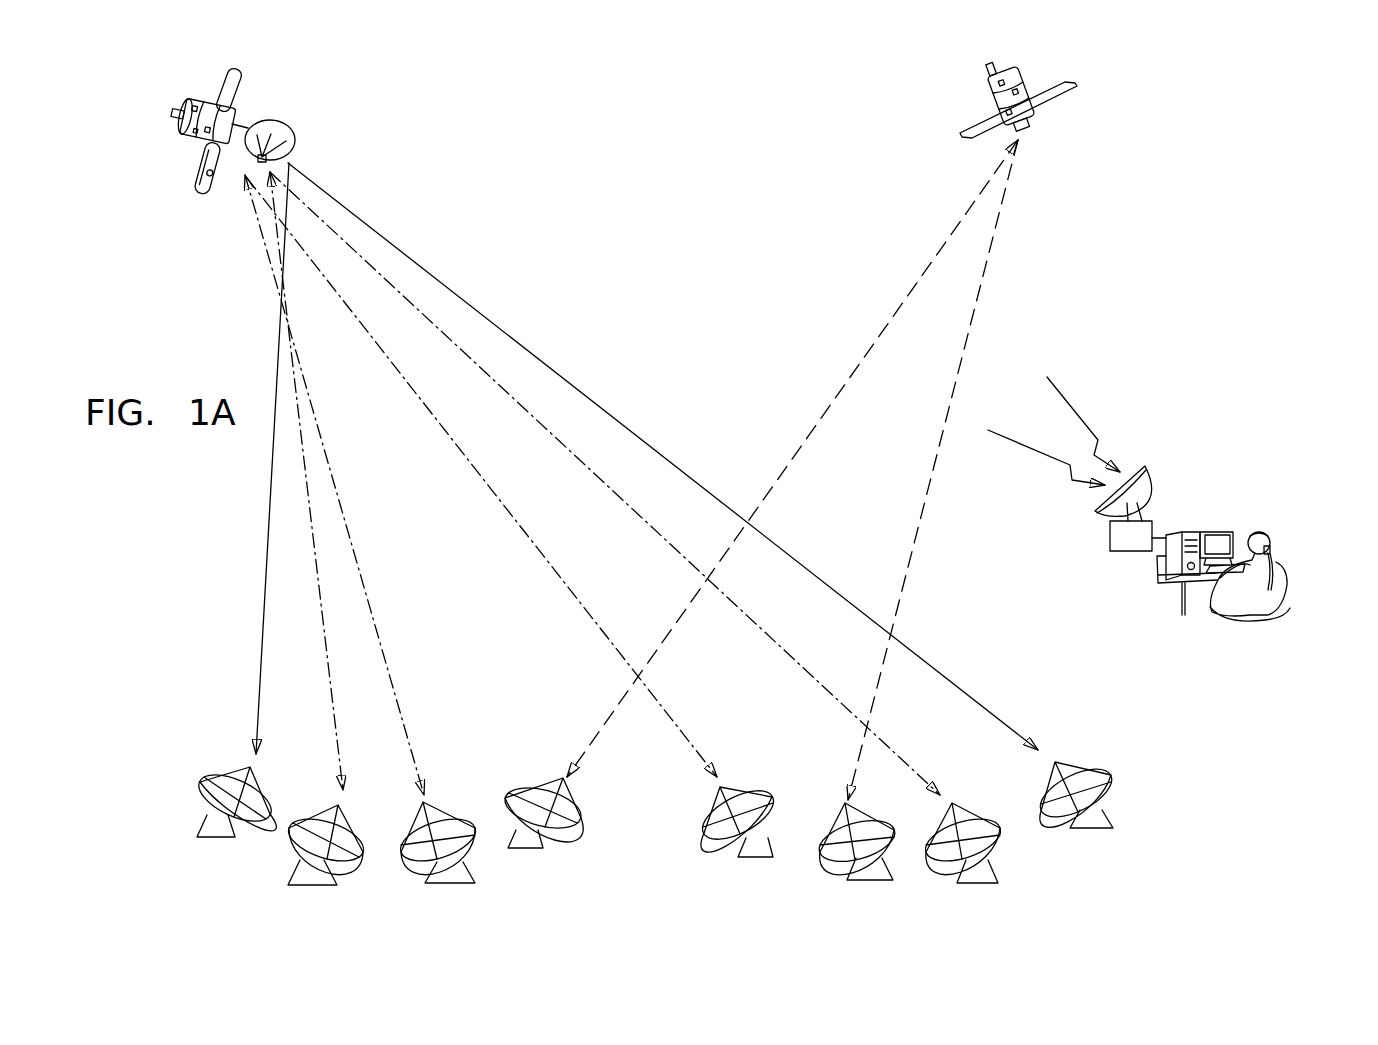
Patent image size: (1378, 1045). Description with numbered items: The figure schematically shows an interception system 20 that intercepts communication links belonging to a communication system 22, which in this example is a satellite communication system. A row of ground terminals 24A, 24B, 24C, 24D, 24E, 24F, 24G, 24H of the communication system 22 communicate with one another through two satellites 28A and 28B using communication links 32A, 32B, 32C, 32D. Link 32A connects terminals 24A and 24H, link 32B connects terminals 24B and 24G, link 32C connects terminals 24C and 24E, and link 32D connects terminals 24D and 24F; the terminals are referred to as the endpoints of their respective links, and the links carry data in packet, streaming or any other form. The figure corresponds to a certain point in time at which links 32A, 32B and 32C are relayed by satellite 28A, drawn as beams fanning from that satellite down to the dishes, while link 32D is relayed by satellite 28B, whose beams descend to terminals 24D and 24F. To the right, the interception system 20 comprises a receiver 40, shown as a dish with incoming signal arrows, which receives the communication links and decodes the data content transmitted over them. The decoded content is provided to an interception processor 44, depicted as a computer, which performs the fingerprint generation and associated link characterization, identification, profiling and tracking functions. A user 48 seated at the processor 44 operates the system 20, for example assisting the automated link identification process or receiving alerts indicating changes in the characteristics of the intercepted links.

The interception system 20 is at (1237, 645).
The communication system 22 is at (1260, 125).
The terminal 24A is at (207, 828).
The terminal 24B is at (303, 859).
The terminal 24C is at (422, 870).
The terminal 24D is at (524, 838).
The terminal 24E is at (740, 845).
The terminal 24F is at (838, 870).
The terminal 24G is at (962, 876).
The terminal 24H is at (1072, 822).
The satellite 28A is at (292, 114).
The satellite 28B is at (983, 92).
The communication link 32A is at (262, 640).
The communication link 32B is at (333, 697).
The communication link 32C is at (372, 608).
The communication link 32D is at (590, 742).
The receiver 40 is at (1110, 538).
The interception processor 44 is at (1191, 534).
The user 48 is at (1268, 532).